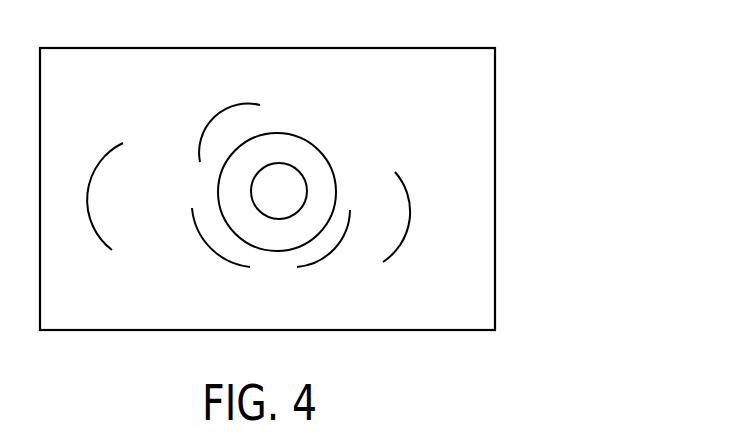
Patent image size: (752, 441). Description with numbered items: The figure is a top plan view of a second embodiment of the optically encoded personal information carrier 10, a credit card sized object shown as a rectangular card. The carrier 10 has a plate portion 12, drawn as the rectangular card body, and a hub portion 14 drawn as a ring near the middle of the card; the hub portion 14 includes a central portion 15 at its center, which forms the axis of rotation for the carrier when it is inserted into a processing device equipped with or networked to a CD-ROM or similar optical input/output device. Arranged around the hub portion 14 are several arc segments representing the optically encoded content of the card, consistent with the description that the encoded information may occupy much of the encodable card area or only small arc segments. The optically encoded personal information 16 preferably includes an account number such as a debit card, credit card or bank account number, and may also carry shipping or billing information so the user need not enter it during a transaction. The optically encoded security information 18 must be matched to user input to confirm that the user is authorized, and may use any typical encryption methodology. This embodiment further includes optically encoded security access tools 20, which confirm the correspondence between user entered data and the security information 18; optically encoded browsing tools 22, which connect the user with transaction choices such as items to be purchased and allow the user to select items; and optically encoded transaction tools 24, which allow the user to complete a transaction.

The personal information carrier 10 is at (496, 128).
The plate portion 12 is at (437, 70).
The hub portion 14 is at (246, 205).
The central portion 15 is at (287, 205).
The optically encoded personal information 16 is at (315, 265).
The optically encoded security information 18 is at (210, 252).
The optically encoded security access tools 20 is at (413, 222).
The optically encoded browsing tools 22 is at (223, 117).
The optically encoded transaction tools 24 is at (106, 154).